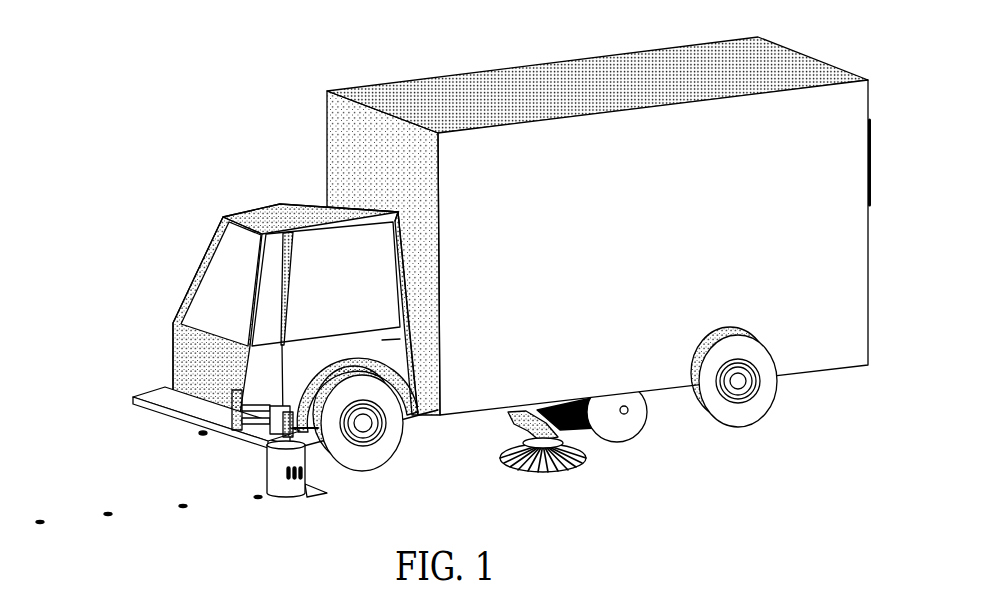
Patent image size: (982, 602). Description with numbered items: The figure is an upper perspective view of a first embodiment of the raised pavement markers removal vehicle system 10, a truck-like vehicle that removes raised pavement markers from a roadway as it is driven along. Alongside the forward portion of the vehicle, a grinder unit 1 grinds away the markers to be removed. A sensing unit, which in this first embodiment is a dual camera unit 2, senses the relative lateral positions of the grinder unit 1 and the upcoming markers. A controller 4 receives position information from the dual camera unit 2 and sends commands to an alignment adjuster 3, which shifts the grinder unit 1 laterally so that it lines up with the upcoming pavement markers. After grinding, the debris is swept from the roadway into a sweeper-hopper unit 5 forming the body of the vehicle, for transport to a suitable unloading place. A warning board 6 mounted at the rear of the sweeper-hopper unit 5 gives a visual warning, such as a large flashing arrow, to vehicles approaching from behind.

The raised pavement markers removal vehicle system 10 is at (152, 56).
The sweeper-hopper unit 5 is at (302, 84).
The warning board 6 is at (871, 133).
The grinder unit 1 is at (248, 470).
The dual camera unit 2 is at (266, 384).
The alignment adjuster 3 is at (205, 436).
The controller 4 is at (290, 412).